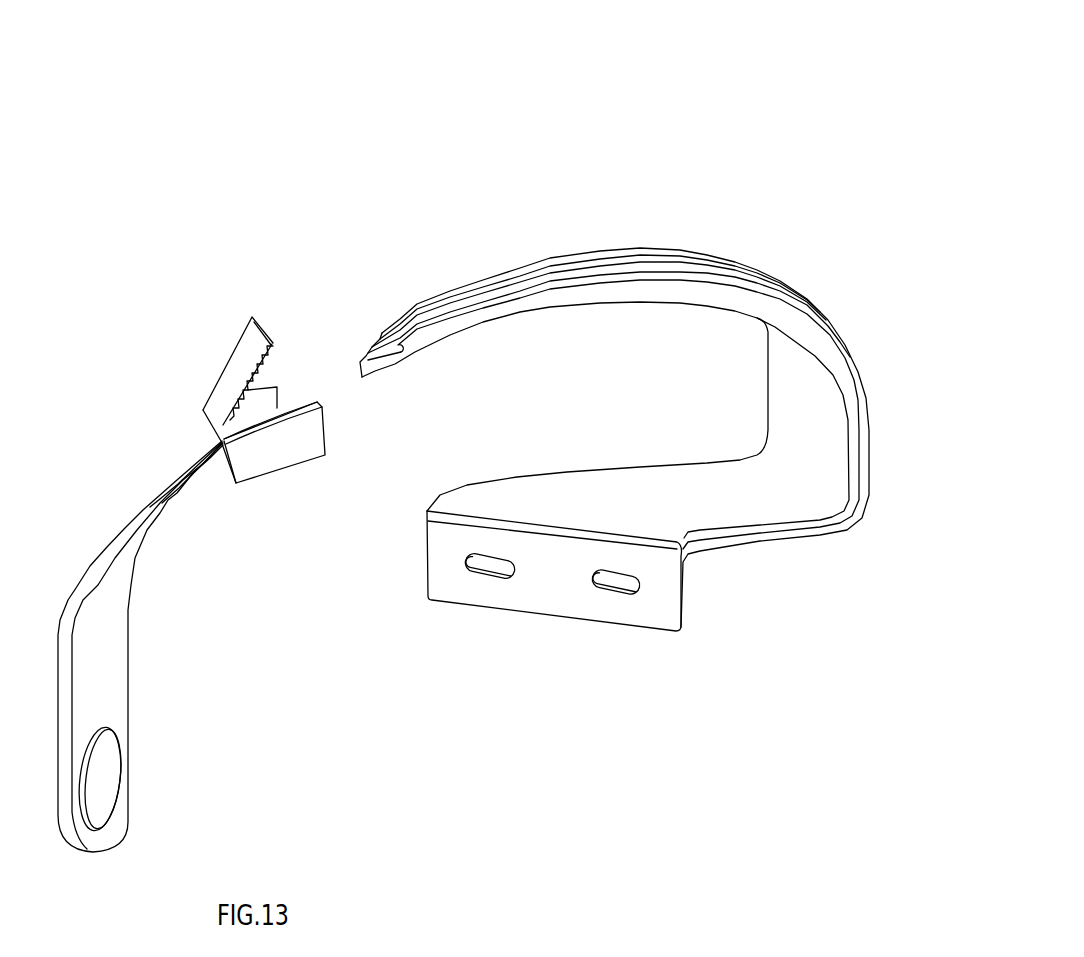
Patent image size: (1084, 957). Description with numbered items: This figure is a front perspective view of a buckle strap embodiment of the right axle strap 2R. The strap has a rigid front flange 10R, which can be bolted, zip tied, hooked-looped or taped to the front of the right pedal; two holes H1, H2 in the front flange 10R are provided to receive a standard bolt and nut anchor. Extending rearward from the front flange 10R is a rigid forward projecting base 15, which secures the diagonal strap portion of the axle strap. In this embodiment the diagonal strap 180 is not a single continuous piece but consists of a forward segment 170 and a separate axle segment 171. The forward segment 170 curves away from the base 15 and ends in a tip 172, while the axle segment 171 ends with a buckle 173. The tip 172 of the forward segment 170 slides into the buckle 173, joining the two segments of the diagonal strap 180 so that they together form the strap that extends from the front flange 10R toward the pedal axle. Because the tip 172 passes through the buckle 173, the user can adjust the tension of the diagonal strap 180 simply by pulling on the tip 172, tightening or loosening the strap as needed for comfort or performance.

The rigid forward projecting base 15 is at (545, 552).
The front flange 10R is at (502, 648).
The hole H1 is at (608, 593).
The hole H2 is at (482, 578).
The forward segment 170 is at (614, 313).
The axle segment 171 is at (88, 677).
The tip 172 is at (405, 345).
The buckle 173 is at (233, 363).
The diagonal strap 180 is at (595, 393).
The right axle strap 2R is at (687, 280).